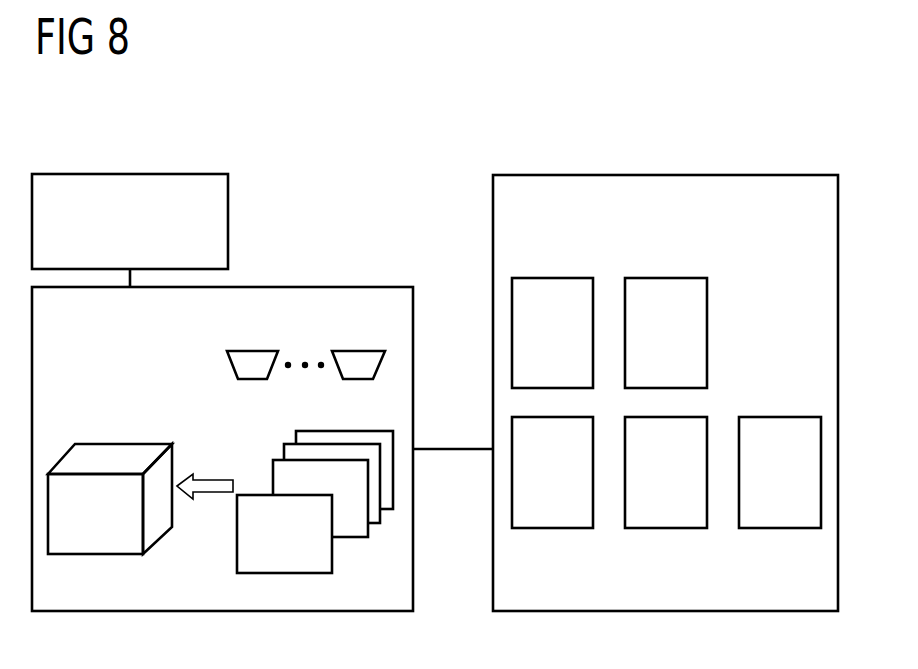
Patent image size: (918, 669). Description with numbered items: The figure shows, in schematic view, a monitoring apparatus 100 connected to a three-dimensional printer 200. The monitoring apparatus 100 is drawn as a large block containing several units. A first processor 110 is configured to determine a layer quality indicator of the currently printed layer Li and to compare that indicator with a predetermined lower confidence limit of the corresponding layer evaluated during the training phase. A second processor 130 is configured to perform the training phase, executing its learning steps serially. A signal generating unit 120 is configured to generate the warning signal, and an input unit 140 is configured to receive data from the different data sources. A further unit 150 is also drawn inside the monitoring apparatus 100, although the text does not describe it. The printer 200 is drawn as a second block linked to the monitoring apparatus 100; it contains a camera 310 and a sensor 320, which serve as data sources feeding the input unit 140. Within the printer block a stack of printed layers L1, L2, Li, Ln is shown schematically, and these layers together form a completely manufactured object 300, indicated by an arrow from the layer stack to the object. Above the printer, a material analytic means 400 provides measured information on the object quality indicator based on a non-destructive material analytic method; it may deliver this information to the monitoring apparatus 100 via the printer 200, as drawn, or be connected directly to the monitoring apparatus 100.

The monitoring apparatus 100 is at (665, 175).
The first processor 110 is at (552, 278).
The signal generating unit 120 is at (665, 278).
The second processor 130 is at (552, 528).
The input unit 140 is at (665, 528).
The output unit 150 is at (780, 528).
The 3D-printer 200 is at (304, 287).
The completely manufactured object 300 is at (122, 444).
The camera 310 is at (248, 351).
The sensor 320 is at (360, 351).
The material analytic means 400 is at (130, 174).
The printed layer L1 is at (372, 432).
The printed layer L2 is at (332, 444).
The currently printed layer Li is at (348, 537).
The printed layer Ln is at (237, 552).